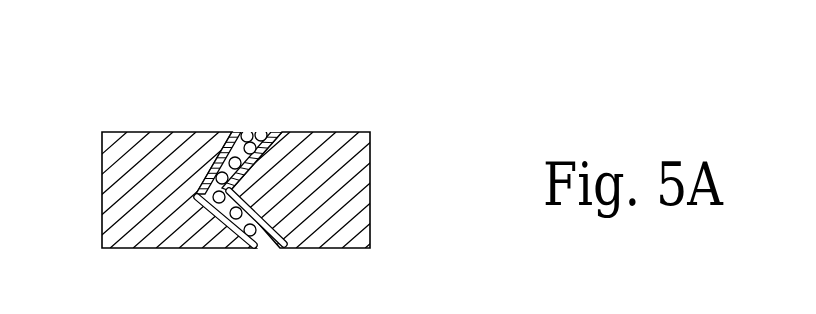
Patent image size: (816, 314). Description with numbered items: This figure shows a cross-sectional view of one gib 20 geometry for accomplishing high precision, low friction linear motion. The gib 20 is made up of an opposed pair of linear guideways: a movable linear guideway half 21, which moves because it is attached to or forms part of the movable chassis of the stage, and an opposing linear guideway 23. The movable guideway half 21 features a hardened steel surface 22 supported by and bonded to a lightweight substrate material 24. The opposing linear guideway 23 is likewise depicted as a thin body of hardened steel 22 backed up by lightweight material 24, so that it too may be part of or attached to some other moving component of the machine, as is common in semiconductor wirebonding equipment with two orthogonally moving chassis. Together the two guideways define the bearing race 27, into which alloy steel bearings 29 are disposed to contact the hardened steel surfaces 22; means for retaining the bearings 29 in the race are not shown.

The gib 20 is at (248, 170).
The movable linear guideway half 21 is at (347, 149).
The hardened steel surface 22 is at (238, 133).
The opposing linear guideway 23 is at (138, 182).
The lightweight substrate material 24 is at (248, 161).
The bearing race 27 is at (193, 200).
The alloy steel bearings 29 is at (231, 193).